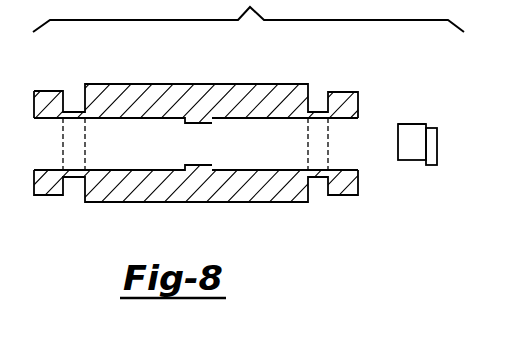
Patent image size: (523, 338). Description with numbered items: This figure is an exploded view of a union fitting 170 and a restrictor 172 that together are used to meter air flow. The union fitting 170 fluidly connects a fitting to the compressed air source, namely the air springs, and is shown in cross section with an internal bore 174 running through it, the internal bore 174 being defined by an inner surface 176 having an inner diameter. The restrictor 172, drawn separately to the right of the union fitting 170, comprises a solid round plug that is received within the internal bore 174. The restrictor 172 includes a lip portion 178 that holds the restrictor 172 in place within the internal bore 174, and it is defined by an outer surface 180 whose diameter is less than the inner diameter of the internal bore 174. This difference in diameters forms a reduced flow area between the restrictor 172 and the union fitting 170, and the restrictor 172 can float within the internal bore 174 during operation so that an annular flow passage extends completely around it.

The union fitting 170 is at (101, 197).
The restrictor 172 is at (412, 150).
The internal bore 174 is at (102, 146).
The inner surface 176 is at (277, 120).
The lip portion 178 is at (438, 148).
The outer surface 180 is at (413, 123).